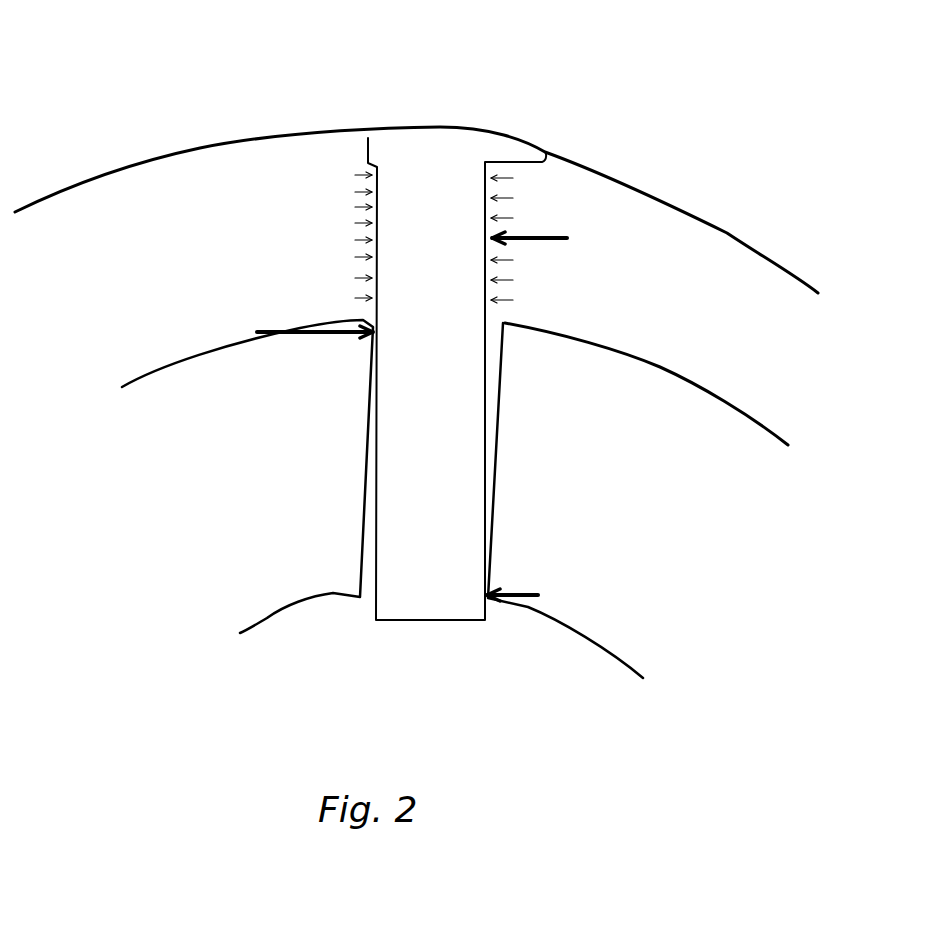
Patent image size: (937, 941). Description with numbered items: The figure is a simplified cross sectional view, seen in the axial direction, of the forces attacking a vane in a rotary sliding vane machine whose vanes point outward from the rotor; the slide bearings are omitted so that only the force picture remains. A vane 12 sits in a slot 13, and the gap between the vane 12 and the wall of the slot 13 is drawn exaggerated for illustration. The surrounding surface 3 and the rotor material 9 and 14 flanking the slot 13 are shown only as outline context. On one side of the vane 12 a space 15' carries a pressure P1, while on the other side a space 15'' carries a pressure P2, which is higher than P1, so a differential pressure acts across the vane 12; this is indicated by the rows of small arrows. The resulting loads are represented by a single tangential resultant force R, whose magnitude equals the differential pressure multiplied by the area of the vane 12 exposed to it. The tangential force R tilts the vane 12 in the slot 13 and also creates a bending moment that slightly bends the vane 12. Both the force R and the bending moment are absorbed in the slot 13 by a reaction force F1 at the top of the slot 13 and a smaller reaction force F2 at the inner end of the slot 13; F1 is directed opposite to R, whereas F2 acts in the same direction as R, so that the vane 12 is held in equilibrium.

The outer surface of rotor / housing wall 3 is at (210, 143).
The first body segment 9 is at (284, 497).
The vane 12 is at (457, 482).
The slot 13 is at (492, 355).
The second body segment outer surface 14 is at (707, 397).
The space 15' is at (229, 234).
The space 15'' is at (636, 253).
The pressure P1 is at (328, 236).
The pressure P2 is at (526, 239).
The tangential resultant force R is at (540, 246).
The reaction force F1 is at (307, 334).
The reaction force F2 is at (520, 590).